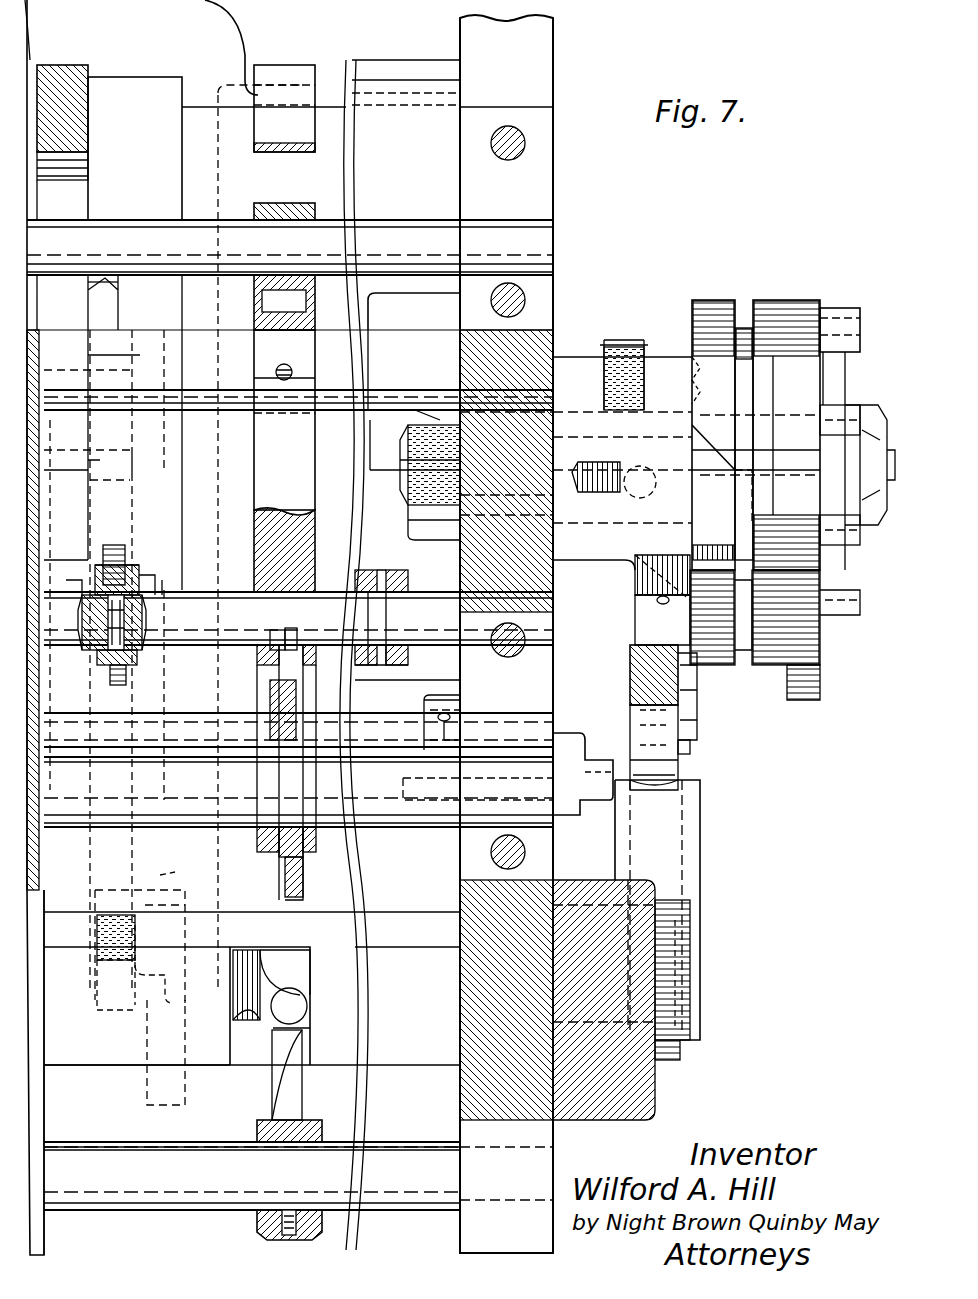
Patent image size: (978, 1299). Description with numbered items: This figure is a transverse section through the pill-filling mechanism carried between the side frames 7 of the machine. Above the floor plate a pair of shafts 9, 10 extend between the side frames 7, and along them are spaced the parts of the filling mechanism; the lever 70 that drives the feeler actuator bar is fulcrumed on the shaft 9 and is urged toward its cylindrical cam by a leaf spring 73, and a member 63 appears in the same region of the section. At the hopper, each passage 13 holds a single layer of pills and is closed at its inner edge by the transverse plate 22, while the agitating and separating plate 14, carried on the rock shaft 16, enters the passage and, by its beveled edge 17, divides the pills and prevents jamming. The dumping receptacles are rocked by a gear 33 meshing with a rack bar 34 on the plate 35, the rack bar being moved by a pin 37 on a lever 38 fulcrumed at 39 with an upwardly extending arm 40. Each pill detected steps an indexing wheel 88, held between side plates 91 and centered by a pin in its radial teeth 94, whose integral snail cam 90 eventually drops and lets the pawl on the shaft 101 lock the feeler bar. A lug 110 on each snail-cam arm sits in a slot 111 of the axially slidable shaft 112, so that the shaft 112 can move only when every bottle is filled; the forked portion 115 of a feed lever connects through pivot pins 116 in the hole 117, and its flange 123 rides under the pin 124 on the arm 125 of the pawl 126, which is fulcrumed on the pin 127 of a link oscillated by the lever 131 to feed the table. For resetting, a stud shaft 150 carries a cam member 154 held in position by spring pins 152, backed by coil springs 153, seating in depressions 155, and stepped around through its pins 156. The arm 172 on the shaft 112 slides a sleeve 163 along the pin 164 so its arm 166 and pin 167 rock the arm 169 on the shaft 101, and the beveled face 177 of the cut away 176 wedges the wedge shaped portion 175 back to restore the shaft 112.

The side frame 7 is at (553, 80).
The shaft 9 is at (393, 228).
The shaft 10 is at (395, 325).
The passage 13 is at (262, 1040).
The agitating and separating plate 14 is at (302, 1095).
The shaft 16 is at (407, 1192).
The beveled edge 17 is at (298, 1045).
The transverse plate 22 is at (391, 928).
The gear 33 is at (680, 940).
The rack bar 34 is at (672, 1060).
The plate 35 is at (700, 862).
The pin 37 is at (690, 748).
The lever 38 is at (678, 762).
The fulcrum 39 is at (697, 725).
The arm 40 is at (690, 710).
The bar 63 is at (284, 433).
The lever 70 is at (285, 203).
The leaf spring 73 is at (268, 152).
The indexing wheel 88 is at (285, 880).
The snail cam 90 is at (279, 862).
The side plates 91 is at (257, 842).
The radial teeth 94 is at (303, 880).
The shaft 101 is at (392, 725).
The lug 110 is at (275, 635).
The slot 111 is at (290, 628).
The shaft 112 is at (423, 610).
The forked portion 115 is at (135, 572).
The pivot pins 116 is at (117, 548).
The hole 117 is at (142, 625).
The flange 123 is at (165, 862).
The pin 124 is at (150, 1005).
The arm 125 is at (172, 985).
The pawl 126 is at (185, 1090).
The pin 127 is at (178, 898).
The lever 131 is at (88, 128).
The stud shaft 150 is at (590, 523).
The spring pin 152 is at (645, 460).
The coil spring 153 is at (592, 462).
The cam member 154 is at (712, 300).
The depressions 155 is at (702, 385).
The pins 156 is at (838, 308).
The sleeve 163 is at (752, 665).
The pin 164 is at (805, 675).
The arm 166 is at (577, 745).
The pin 167 is at (403, 788).
The arm 169 is at (455, 748).
The arm 172 is at (408, 660).
The wedge shaped portion 175 is at (650, 570).
The cut away 176 is at (715, 455).
The beveled face 177 is at (718, 428).